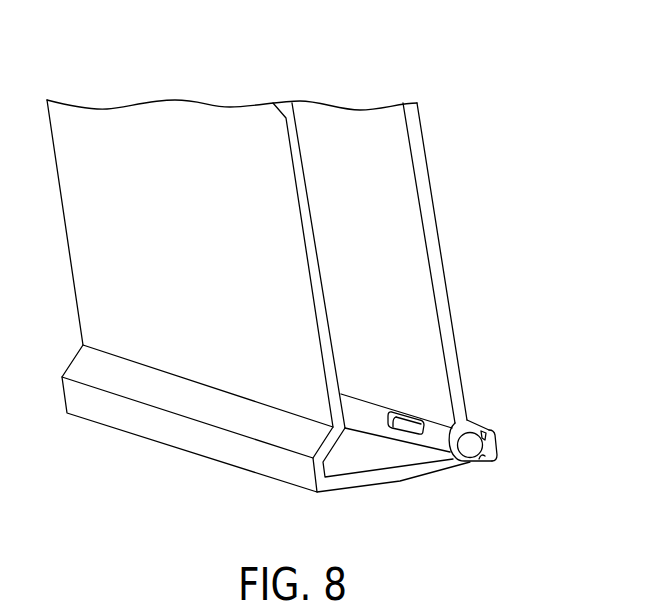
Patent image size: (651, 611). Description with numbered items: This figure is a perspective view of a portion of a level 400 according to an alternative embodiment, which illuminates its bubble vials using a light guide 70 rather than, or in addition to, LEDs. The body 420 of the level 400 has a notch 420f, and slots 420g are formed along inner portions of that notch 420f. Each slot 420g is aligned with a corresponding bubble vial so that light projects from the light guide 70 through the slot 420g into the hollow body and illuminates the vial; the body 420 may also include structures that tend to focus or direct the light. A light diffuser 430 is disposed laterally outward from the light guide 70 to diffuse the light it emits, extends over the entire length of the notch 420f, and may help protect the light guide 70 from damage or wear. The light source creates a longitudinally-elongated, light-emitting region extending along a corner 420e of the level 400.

The level 400 is at (202, 85).
The body 420 is at (428, 151).
The slot 420g is at (388, 411).
The notch 420f is at (462, 432).
The corner 420e is at (487, 474).
The light diffuser 430 is at (497, 447).
The light guide 70 is at (469, 447).